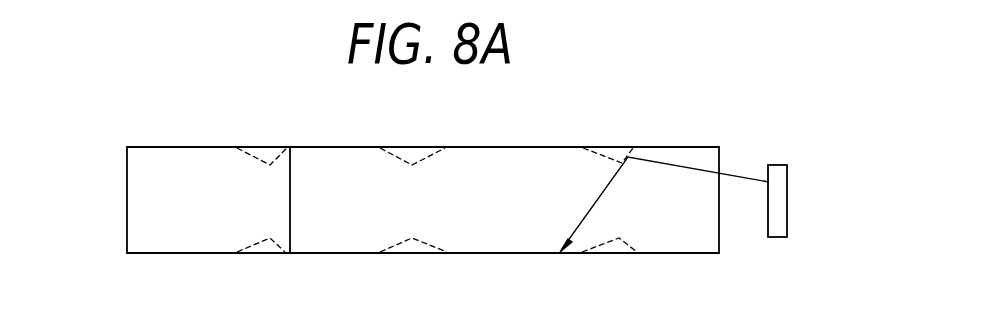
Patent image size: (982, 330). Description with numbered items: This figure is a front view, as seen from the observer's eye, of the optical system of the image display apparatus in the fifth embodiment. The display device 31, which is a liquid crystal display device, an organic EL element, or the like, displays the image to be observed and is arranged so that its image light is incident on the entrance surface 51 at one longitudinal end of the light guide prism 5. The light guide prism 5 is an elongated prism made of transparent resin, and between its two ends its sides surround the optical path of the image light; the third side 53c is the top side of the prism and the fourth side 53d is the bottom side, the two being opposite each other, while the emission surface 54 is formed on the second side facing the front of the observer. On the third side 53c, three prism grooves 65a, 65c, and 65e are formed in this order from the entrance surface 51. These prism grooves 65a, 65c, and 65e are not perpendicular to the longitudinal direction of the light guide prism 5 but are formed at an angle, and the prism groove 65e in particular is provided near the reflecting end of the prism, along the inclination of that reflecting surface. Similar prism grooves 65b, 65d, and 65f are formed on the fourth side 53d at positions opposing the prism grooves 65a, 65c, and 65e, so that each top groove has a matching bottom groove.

The light guide prism 5 is at (419, 165).
The emission surface 54 is at (175, 202).
The entrance surface 51 is at (720, 158).
The third side 53c is at (498, 147).
The fourth side 53d is at (498, 255).
The prism groove 65a is at (617, 157).
The prism groove 65b is at (615, 245).
The prism groove 65c is at (411, 160).
The prism groove 65d is at (412, 252).
The prism groove 65e is at (267, 160).
The prism groove 65f is at (265, 252).
The display device 31 is at (789, 203).